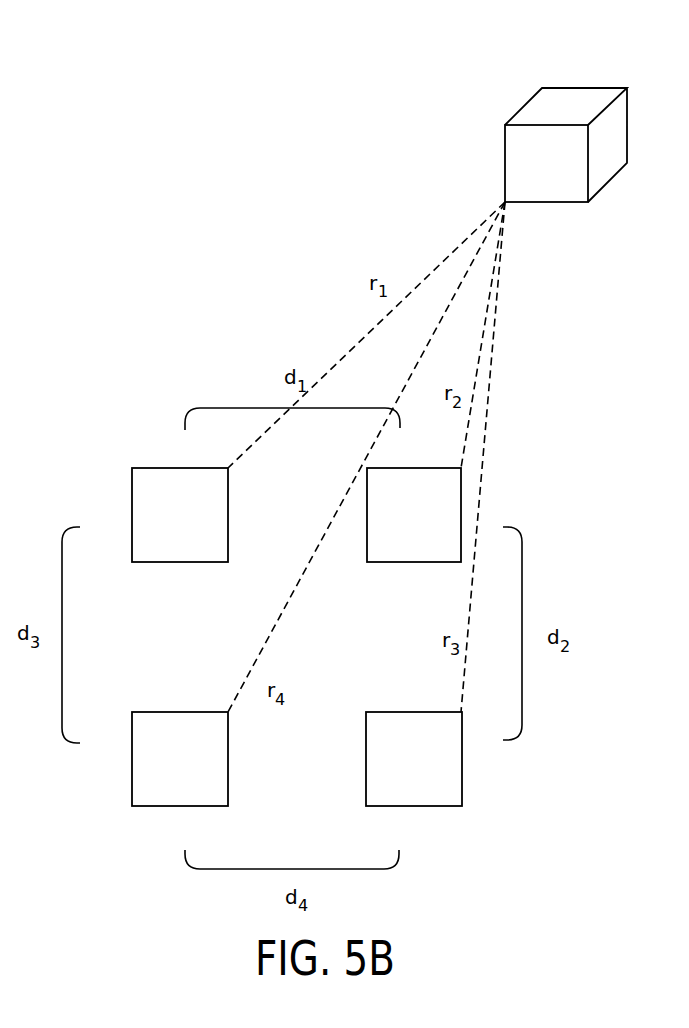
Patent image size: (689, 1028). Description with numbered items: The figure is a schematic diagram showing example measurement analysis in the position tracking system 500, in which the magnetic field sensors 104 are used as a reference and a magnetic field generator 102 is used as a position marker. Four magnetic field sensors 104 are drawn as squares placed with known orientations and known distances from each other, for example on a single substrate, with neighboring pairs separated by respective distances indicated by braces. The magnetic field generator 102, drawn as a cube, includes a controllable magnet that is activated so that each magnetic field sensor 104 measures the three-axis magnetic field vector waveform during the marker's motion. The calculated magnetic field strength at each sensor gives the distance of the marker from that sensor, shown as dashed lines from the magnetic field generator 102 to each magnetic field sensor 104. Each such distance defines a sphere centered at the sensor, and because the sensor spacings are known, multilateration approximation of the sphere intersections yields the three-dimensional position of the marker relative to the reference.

The position tracking system 500 is at (100, 186).
The magnetic field generator 102 is at (580, 85).
The magnetic field sensor 104 is at (158, 468).